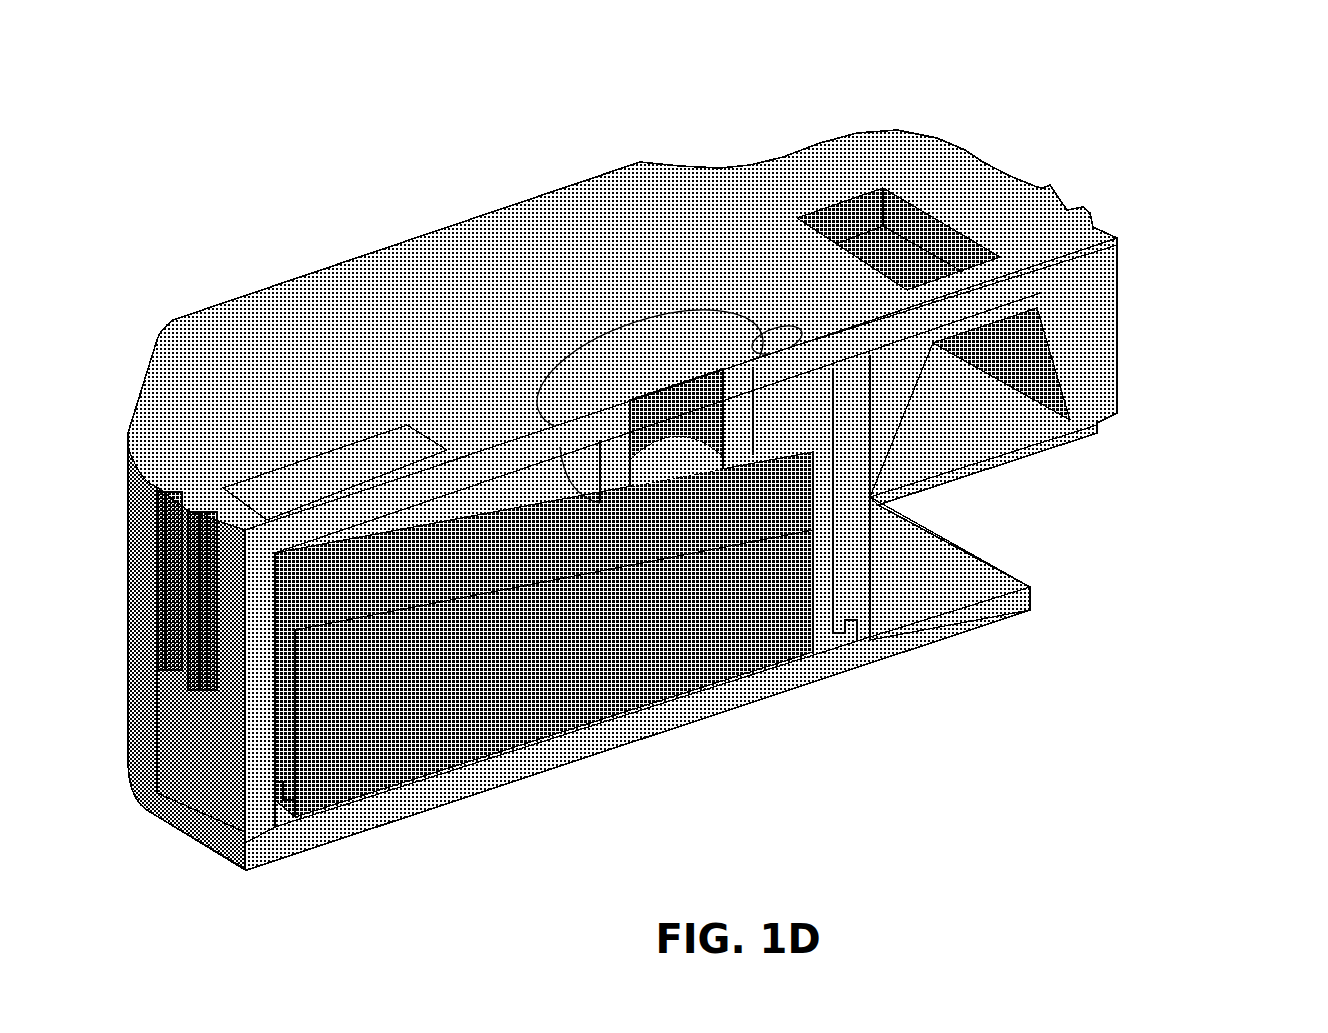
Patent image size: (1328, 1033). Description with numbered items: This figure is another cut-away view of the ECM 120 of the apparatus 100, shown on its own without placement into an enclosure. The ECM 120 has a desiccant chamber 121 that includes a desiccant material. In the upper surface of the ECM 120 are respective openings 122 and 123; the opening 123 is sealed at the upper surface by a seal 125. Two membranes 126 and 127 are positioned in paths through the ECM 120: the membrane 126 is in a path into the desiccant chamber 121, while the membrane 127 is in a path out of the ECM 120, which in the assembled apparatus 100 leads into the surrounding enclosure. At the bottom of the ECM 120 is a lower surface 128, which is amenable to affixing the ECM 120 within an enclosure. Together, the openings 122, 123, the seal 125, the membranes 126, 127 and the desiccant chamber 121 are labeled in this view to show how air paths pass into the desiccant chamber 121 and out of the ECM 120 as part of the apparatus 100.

The apparatus 100 is at (1220, 45).
The ECM 120 is at (244, 398).
The desiccant chamber 121 is at (453, 807).
The opening 122 is at (931, 262).
The opening 123 is at (652, 405).
The seal 125 is at (578, 340).
The membrane 126 is at (790, 693).
The membrane 127 is at (1007, 460).
The lower surface 128 is at (927, 630).